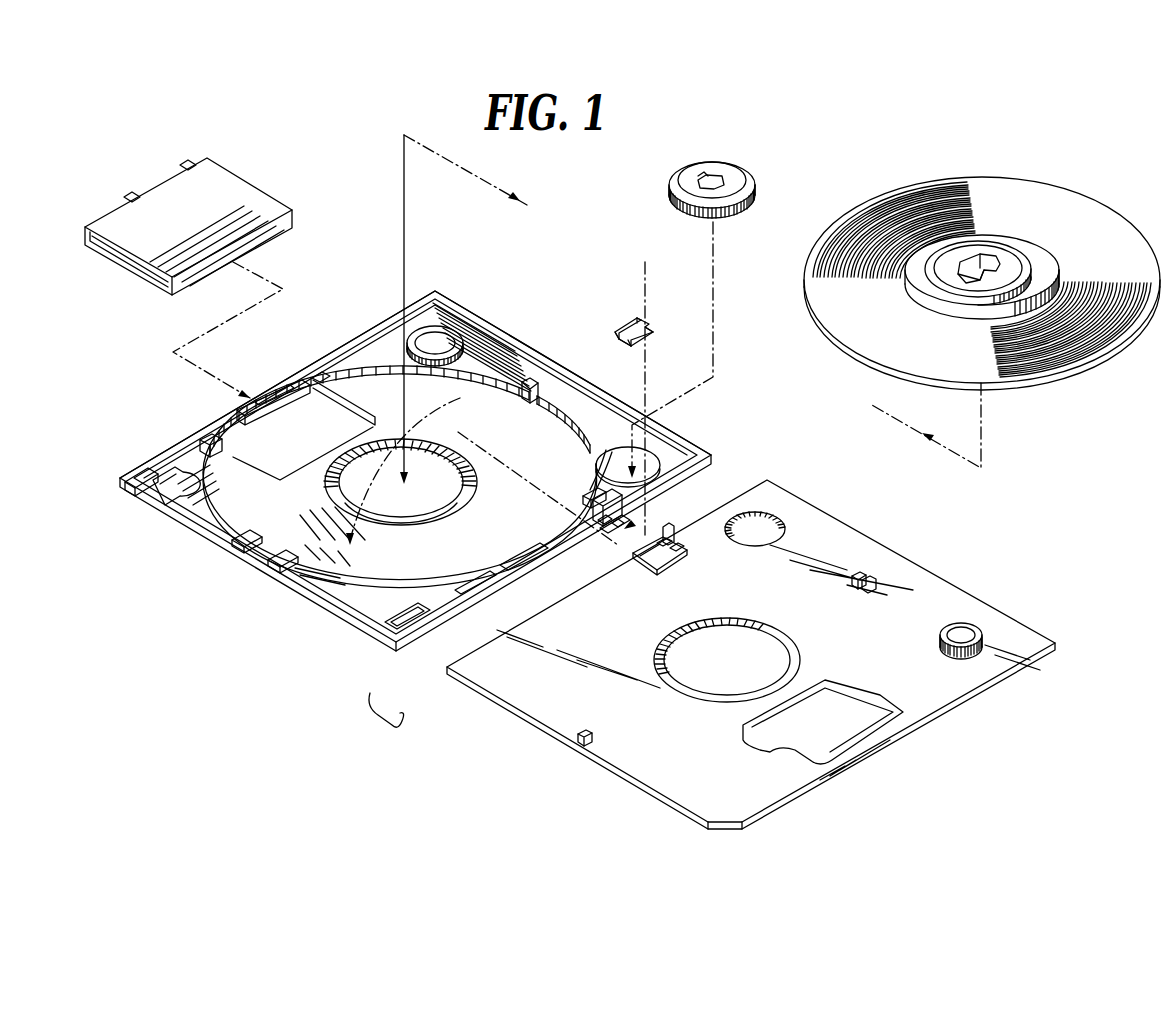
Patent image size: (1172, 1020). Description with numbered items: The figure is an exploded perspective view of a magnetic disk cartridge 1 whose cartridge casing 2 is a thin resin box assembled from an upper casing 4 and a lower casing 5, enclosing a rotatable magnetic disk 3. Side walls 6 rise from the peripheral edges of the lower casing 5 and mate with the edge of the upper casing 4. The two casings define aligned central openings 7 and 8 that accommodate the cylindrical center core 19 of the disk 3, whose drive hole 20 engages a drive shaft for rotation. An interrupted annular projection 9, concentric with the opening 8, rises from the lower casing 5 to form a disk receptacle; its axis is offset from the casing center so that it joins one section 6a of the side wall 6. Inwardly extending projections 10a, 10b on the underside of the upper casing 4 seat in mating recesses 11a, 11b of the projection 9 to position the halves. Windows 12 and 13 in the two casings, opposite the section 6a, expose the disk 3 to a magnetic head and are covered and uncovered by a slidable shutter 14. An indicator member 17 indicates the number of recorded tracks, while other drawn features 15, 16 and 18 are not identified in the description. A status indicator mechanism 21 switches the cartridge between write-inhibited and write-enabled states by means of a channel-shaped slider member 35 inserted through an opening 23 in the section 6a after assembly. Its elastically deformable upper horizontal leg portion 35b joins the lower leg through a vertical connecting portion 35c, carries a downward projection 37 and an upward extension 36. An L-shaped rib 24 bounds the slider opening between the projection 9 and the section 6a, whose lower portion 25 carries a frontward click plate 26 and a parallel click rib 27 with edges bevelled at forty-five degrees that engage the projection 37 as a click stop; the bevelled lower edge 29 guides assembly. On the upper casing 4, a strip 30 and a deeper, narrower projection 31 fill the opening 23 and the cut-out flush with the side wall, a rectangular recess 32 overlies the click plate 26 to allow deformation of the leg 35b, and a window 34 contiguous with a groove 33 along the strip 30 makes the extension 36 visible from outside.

The magnetic disk cartridge 1 is at (332, 661).
The cartridge casing 2 is at (386, 720).
The magnetic disk 3 is at (1040, 196).
The upper casing 4 is at (454, 678).
The lower casing 5 is at (402, 655).
The side wall 6 is at (528, 350).
The section of side wall 6a is at (470, 603).
The central opening 7 is at (762, 660).
The central opening 8 is at (435, 498).
The annular projection 9 is at (472, 372).
The inwardly-extending projection 10a is at (576, 745).
The inwardly-extending projection 10b is at (868, 580).
The recess 11a is at (265, 568).
The recess 11b is at (562, 396).
The window 12 is at (770, 748).
The window 13 is at (272, 468).
The shutter 14 is at (248, 190).
The hole 15 is at (772, 512).
The hole 16 is at (656, 462).
The indicator member 17 is at (745, 178).
The spindle hole 18 is at (712, 172).
The center core 19 is at (983, 250).
The drive hole 20 is at (1000, 262).
The status indicator mechanism 21 is at (613, 528).
The opening 23 is at (616, 535).
The rib 24 is at (612, 465).
The lower portion 25 is at (592, 522).
The click plate 26 is at (582, 482).
The click rib 27 is at (586, 505).
The lower edge 29 is at (604, 548).
The strip 30 is at (656, 532).
The projection 31 is at (675, 525).
The rectangular recess 32 is at (672, 556).
The groove 33 is at (660, 568).
The window 34 is at (684, 550).
The slider member 35 is at (652, 325).
The upper horizontal leg portion 35b is at (620, 322).
The intermediate vertical connecting portion 35c is at (655, 334).
The extension 36 is at (636, 320).
The projection 37 is at (646, 345).